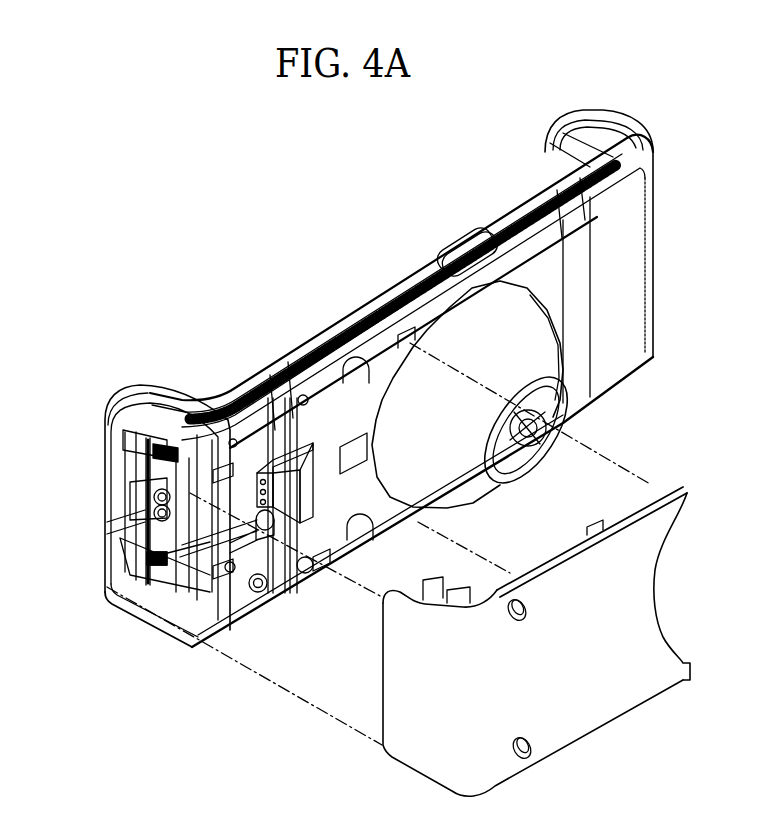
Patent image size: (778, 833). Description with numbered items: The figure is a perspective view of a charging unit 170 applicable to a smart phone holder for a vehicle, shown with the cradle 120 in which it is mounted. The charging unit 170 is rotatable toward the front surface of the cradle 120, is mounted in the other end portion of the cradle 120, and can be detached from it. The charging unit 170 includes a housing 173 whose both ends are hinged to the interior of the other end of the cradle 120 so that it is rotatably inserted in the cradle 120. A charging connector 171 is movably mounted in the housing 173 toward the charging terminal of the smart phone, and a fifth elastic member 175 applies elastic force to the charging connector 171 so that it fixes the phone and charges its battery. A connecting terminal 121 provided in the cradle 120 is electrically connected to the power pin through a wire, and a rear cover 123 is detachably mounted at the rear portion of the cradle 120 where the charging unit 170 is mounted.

The cradle 120 is at (327, 352).
The connecting terminal 121 is at (257, 470).
The rear cover 123 is at (408, 753).
The charging unit 170 is at (105, 558).
The charging connector 171 is at (125, 538).
The housing 173 is at (135, 468).
The fifth elastic member 175 is at (120, 428).